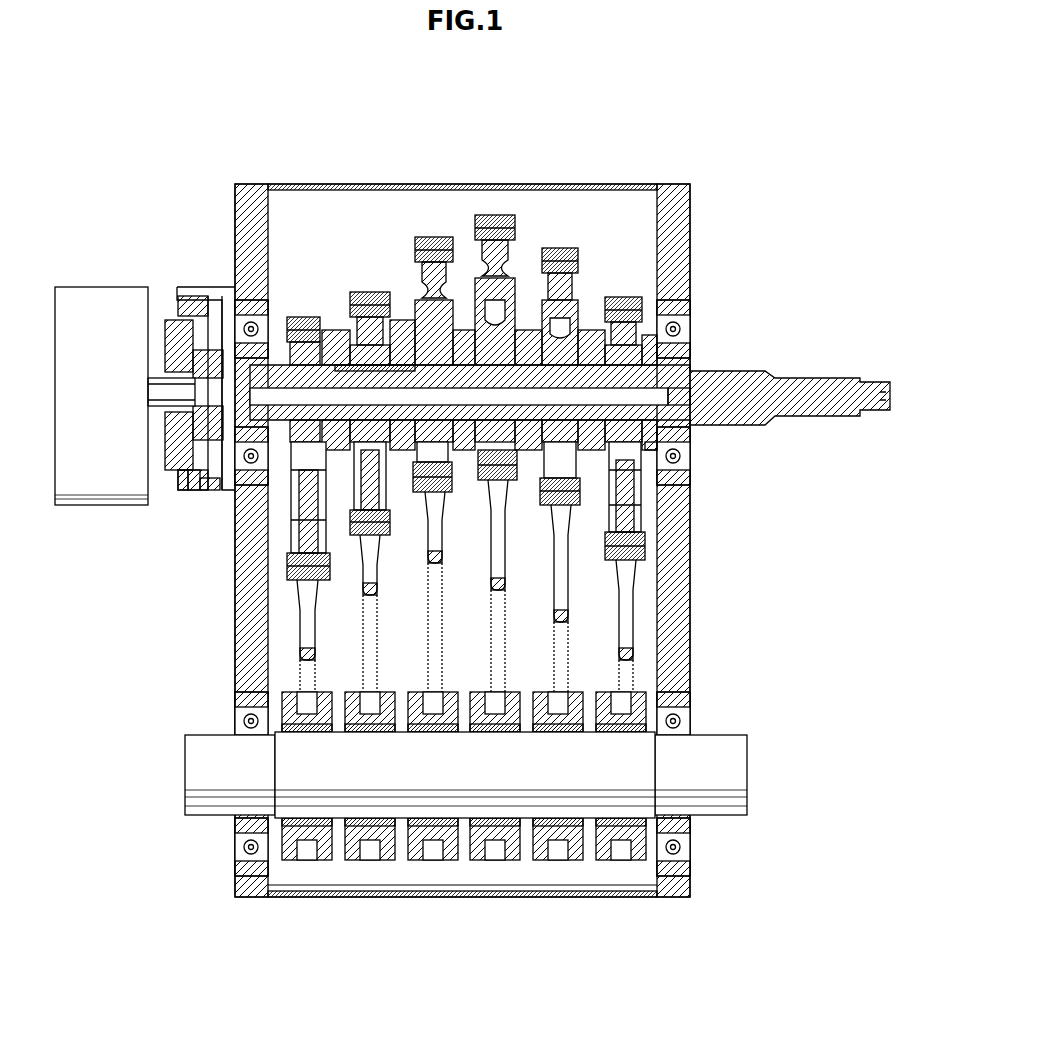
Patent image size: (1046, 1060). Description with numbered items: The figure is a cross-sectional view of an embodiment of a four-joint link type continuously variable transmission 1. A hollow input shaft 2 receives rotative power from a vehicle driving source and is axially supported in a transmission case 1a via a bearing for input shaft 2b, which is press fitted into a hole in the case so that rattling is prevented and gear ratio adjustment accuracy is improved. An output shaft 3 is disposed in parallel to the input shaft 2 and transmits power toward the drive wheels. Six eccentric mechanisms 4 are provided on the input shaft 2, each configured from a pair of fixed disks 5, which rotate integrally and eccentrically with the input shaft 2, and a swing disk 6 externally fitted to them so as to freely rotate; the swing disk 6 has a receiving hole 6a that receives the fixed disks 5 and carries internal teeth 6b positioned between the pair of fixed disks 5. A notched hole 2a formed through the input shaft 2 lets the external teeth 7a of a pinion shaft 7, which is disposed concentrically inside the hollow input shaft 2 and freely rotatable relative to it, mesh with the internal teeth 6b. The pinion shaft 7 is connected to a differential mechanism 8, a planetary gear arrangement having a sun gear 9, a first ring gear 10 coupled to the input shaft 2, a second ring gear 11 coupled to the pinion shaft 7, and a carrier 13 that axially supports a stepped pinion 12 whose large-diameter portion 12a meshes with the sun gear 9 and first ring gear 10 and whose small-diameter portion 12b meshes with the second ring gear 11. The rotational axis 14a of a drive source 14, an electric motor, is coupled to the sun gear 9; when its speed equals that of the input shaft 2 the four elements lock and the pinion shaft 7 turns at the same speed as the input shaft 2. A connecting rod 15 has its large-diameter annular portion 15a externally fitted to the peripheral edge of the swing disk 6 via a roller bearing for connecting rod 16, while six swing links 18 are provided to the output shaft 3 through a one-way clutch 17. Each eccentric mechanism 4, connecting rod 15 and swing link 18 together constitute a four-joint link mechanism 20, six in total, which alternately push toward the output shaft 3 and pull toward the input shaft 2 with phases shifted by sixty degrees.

The continuously variable transmission 1 is at (206, 128).
The transmission case 1a is at (257, 184).
The input shaft 2 is at (806, 374).
The notched hole 2a is at (372, 362).
The bearing for input shaft 2b is at (245, 292).
The output shaft 3 is at (748, 768).
The eccentric mechanism 4 is at (643, 140).
The fixed disk 5 is at (600, 332).
The swing disk 6 is at (590, 330).
The receiving hole 6a is at (560, 330).
The internal teeth 6b is at (365, 440).
The pinion shaft 7 is at (660, 414).
The external teeth 7a is at (640, 472).
The differential mechanism 8 is at (203, 282).
The sun gear 9 is at (172, 425).
The first ring gear 10 is at (182, 294).
The second ring gear 11 is at (212, 492).
The stepped pinion 12 is at (200, 590).
The large-diameter portion 12a is at (182, 488).
The small-diameter portion 12b is at (198, 494).
The carrier 13 is at (165, 334).
The drive source 14 is at (88, 402).
The rotational axis 14a is at (172, 390).
The connecting rod 15 is at (626, 604).
The large-diameter annular portion 15a is at (625, 300).
The roller bearing for connecting rod 16 is at (482, 215).
The one-way clutch 17 is at (626, 842).
The swing link 18 is at (560, 848).
The four-joint link mechanism 20 is at (305, 878).